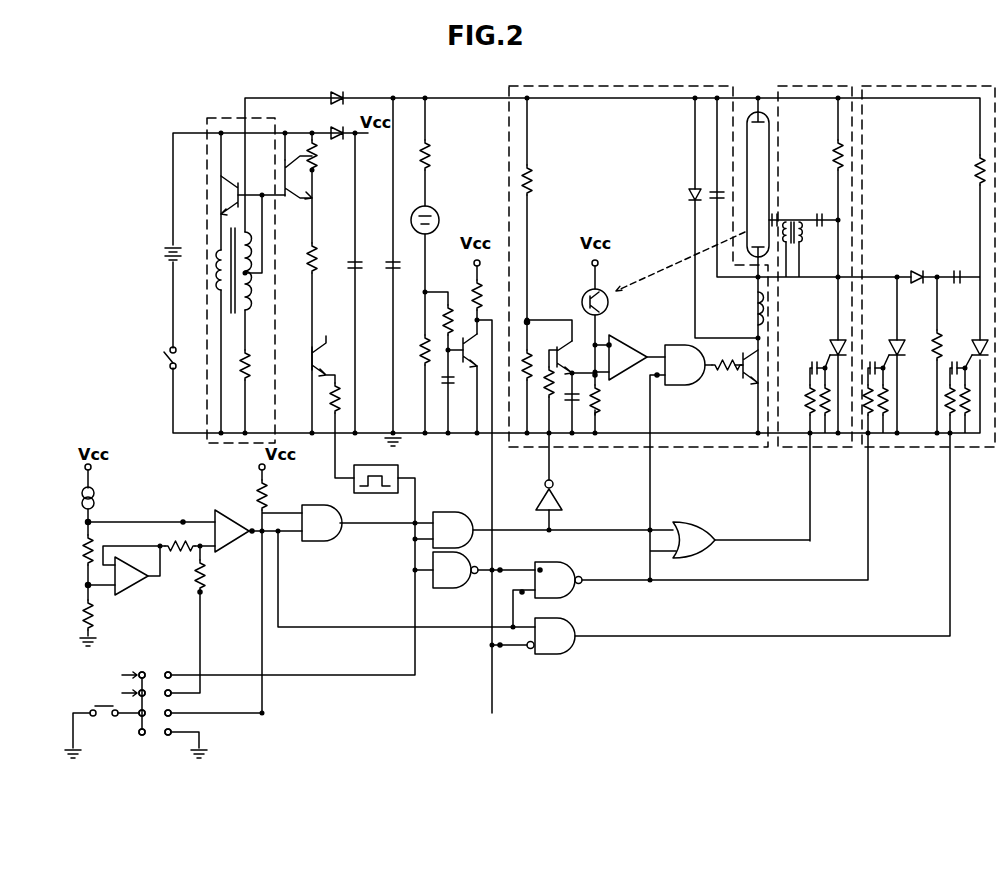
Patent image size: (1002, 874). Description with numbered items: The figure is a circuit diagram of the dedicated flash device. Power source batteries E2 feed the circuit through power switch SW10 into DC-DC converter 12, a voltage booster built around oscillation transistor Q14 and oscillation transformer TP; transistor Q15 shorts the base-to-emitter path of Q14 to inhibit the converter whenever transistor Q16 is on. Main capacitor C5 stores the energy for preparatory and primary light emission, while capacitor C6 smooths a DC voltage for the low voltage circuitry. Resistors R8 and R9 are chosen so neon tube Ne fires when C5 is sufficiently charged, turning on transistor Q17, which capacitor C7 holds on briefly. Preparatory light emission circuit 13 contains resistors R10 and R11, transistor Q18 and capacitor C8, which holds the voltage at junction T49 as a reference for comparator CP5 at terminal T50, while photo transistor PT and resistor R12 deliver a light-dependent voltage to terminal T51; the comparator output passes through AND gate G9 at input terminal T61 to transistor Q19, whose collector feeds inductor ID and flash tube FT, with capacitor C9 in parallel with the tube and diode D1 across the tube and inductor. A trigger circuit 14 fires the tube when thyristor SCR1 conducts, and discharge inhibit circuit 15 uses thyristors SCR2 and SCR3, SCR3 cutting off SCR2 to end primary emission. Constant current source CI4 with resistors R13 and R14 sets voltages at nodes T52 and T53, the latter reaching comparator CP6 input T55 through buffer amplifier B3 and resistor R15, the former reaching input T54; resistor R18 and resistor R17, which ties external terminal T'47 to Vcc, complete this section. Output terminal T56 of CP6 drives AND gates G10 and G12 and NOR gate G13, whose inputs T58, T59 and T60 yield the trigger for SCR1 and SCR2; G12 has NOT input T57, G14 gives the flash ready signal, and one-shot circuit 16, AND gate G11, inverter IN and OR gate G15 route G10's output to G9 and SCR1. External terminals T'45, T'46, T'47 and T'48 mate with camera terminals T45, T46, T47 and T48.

The DC-DC converter 12 is at (212, 118).
The preparatory light emission circuit 13 is at (622, 86).
The trigger circuit 14 is at (812, 86).
The discharge inhibit circuit 15 is at (920, 86).
The one-shot circuit 16 is at (400, 472).
The power source batteries E2 is at (165, 253).
The power switch SW10 is at (168, 358).
The oscillation transformer TP is at (230, 295).
The oscillation transistor Q14 is at (228, 196).
The transistor Q15 is at (296, 192).
The transistor Q16 is at (310, 360).
The transistor Q17 is at (462, 338).
The transistor Q18 is at (560, 345).
The transistor Q19 is at (743, 378).
The main capacitor C5 is at (393, 262).
The capacitor C6 is at (355, 262).
The capacitor C7 is at (450, 383).
The capacitor C8 is at (571, 400).
The capacitor C9 is at (712, 190).
The diode D1 is at (688, 195).
The resistor R8 is at (428, 156).
The resistor R9 is at (422, 350).
The resistor R10 is at (530, 182).
The resistor R11 is at (530, 362).
The resistor R12 is at (597, 398).
The resistor R13 is at (85, 550).
The resistor R14 is at (85, 614).
The resistor R15 is at (180, 550).
The resistor R17 is at (266, 494).
The resistor R18 is at (203, 566).
The neon tube Ne is at (433, 213).
The flash tube FT is at (769, 135).
The photo transistor PT is at (610, 295).
The inductor ID is at (756, 310).
The comparator CP5 is at (633, 352).
The comparator CP6 is at (222, 510).
The buffer amplifier B3 is at (138, 590).
The constant current source CI4 is at (96, 496).
The AND gate G9 is at (685, 365).
The AND gate G10 is at (322, 523).
The AND gate G11 is at (453, 530).
The AND gate G12 is at (551, 636).
The NOR gate G13 is at (558, 580).
The AND gate G14 is at (455, 570).
The OR gate G15 is at (694, 540).
The inverter IN is at (556, 488).
The thyristor SCR1 is at (835, 348).
The thyristor SCR2 is at (893, 348).
The thyristor SCR3 is at (975, 348).
The junction T49 is at (528, 320).
The terminal T50 is at (612, 345).
The input terminal T51 is at (600, 375).
The input terminal T61 is at (658, 378).
The node T52 is at (85, 522).
The node T53 is at (85, 586).
The input terminal T54 is at (183, 520).
The input terminal T55 is at (205, 592).
The output terminal T56 is at (250, 528).
The input terminal T57 is at (498, 648).
The input terminal T58 is at (540, 568).
The input terminal T59 is at (500, 570).
The input terminal T60 is at (522, 594).
The terminal T45 is at (140, 668).
The external terminal T'45 is at (167, 663).
The external output terminal T46 is at (138, 692).
The external terminal T'46 is at (206, 698).
The terminal T47 is at (138, 718).
The external terminal T'47 is at (209, 728).
The terminal T48 is at (145, 738).
The external terminal T'48 is at (192, 755).